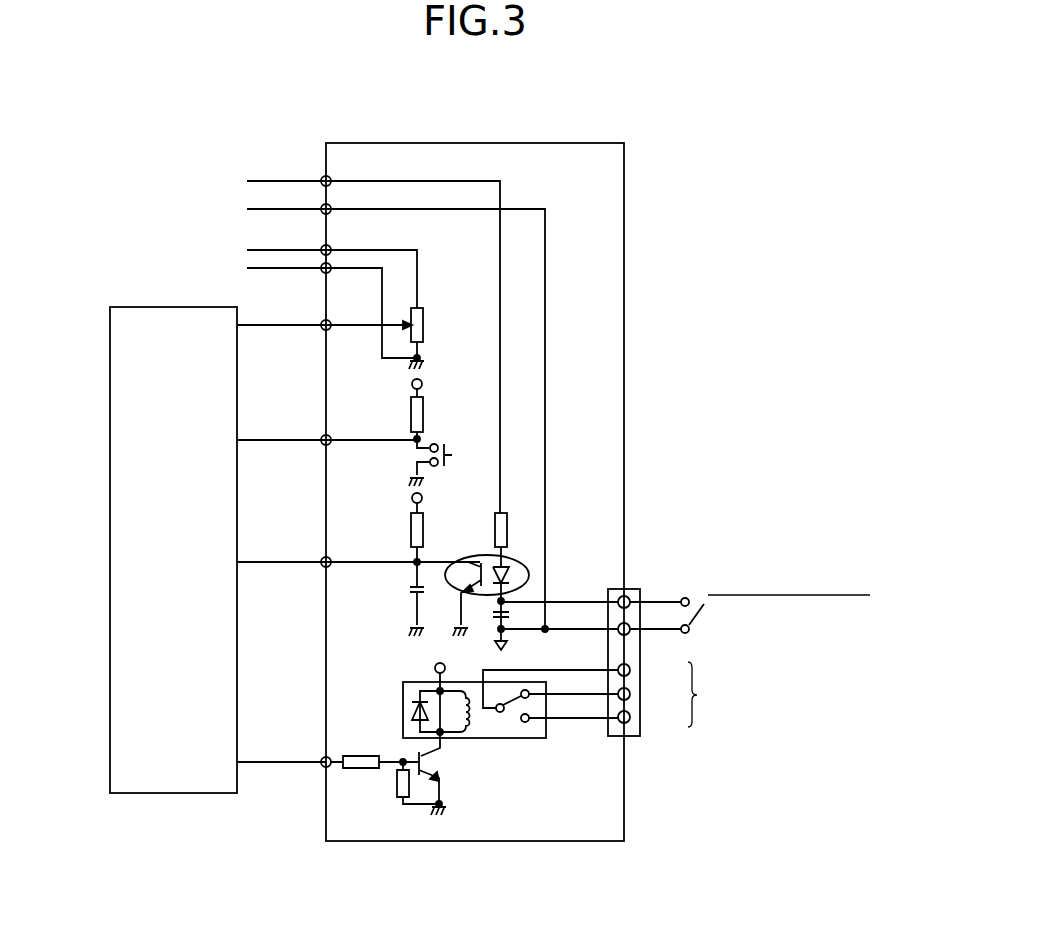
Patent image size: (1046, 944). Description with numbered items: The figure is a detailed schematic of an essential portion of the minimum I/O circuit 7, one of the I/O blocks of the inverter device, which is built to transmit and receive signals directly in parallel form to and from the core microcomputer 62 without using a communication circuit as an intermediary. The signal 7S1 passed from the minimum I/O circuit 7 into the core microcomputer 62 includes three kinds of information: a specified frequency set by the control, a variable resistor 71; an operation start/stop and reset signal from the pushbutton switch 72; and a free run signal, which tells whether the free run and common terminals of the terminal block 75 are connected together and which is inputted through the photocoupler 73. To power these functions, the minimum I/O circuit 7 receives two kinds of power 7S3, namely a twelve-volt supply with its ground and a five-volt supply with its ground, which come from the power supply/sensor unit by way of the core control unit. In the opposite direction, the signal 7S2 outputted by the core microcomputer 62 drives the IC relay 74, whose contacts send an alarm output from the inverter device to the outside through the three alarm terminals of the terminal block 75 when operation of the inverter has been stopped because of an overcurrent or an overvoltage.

The minimum I/O circuit 7 is at (382, 842).
The signal 7S1 is at (268, 582).
The signal 7S2 is at (273, 762).
The power 7S3 is at (278, 274).
The core microcomputer 62 is at (110, 497).
The control (variable resistor) 71 is at (423, 325).
The pushbutton switch 72 is at (432, 432).
The photocoupler 73 is at (523, 571).
The IC relay 74 is at (500, 738).
The terminal block 75 is at (633, 731).